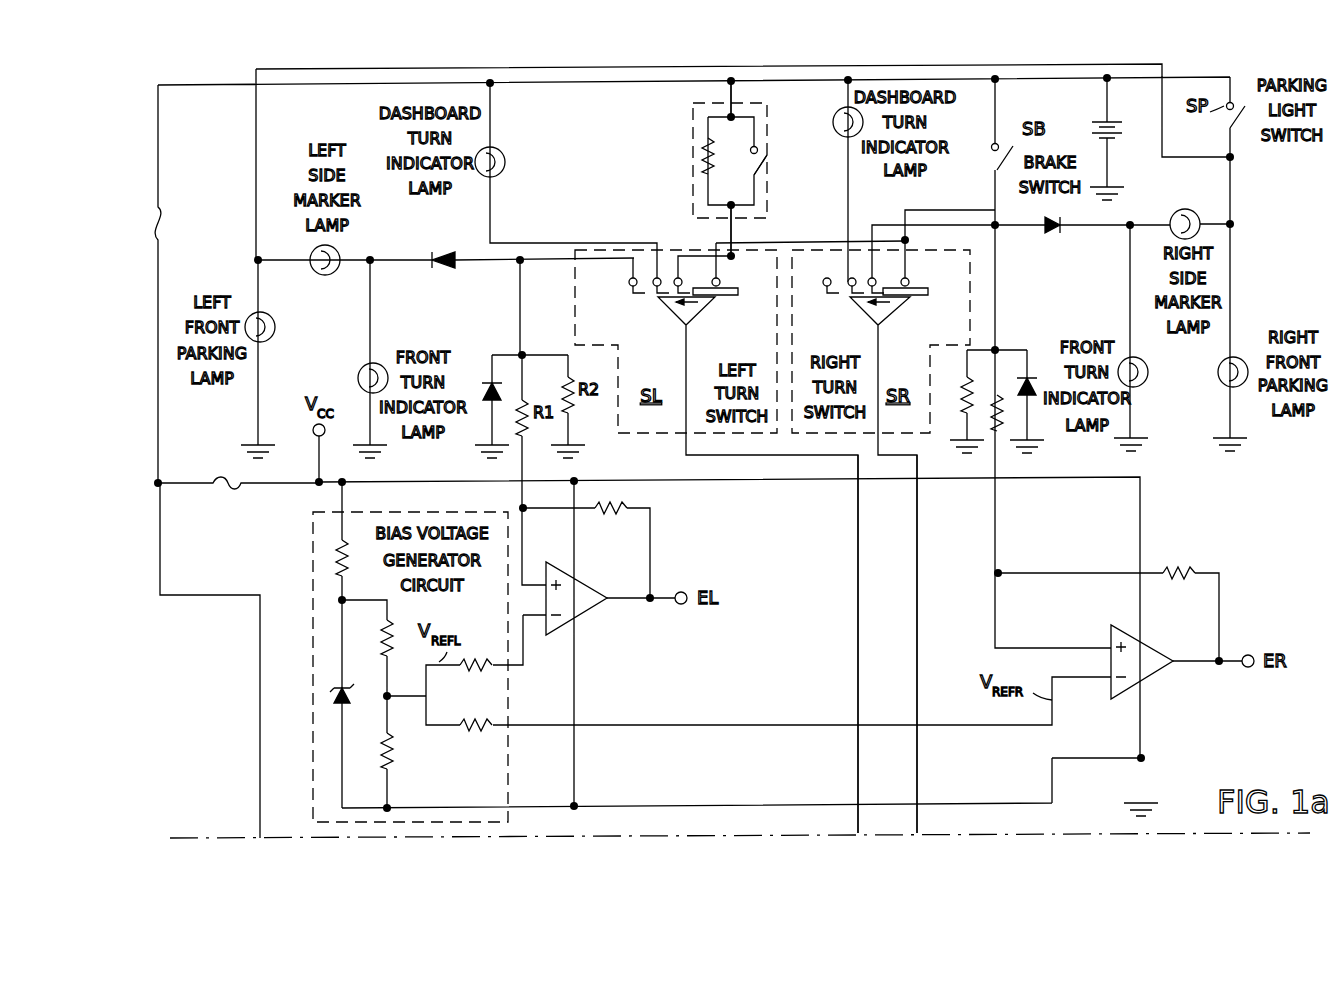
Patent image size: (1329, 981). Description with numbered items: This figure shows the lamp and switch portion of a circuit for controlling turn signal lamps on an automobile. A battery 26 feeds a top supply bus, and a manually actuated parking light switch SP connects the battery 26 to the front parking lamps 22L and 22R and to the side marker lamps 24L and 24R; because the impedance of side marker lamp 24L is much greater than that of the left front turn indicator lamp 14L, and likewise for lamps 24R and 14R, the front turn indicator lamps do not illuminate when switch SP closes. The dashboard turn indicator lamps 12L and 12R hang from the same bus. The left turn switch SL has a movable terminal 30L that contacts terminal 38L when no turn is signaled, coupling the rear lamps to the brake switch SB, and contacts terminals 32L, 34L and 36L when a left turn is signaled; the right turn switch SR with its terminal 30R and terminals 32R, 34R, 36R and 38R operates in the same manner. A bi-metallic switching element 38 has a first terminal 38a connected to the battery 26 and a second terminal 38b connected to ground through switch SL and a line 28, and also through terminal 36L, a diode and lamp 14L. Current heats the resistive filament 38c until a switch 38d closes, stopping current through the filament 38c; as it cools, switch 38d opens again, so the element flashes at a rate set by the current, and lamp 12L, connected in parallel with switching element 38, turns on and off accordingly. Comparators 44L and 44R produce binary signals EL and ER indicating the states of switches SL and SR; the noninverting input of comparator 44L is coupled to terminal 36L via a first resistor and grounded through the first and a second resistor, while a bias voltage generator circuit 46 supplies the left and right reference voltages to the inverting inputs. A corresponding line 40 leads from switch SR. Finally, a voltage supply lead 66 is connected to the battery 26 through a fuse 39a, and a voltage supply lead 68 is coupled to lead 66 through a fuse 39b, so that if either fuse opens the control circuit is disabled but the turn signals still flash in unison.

The left turn dashboard indicator lamp 12L is at (500, 177).
The right turn dashboard indicator lamp 12R is at (833, 116).
The left turn front indicator lamp 14L is at (357, 370).
The right turn front indicator lamp 14R is at (1142, 385).
The left front parking lamp 22L is at (268, 344).
The right front parking lamp 22R is at (1222, 388).
The left side marker lamp 24L is at (322, 278).
The right side marker lamp 24R is at (1190, 206).
The battery 26 is at (1115, 150).
The line 28 is at (858, 757).
The switch terminal 30L is at (716, 517).
The switch terminal 30R is at (882, 509).
The terminal 32L is at (676, 268).
The terminal 32R is at (824, 286).
The terminal 34L is at (655, 276).
The terminal 34R is at (851, 276).
The terminal 36L is at (631, 280).
The terminal 36R is at (888, 226).
The bi-metallic switching element 38 is at (768, 192).
The first terminal 38a is at (731, 100).
The second terminal 38b is at (731, 235).
The resistive filament 38c is at (693, 152).
The switch 38d is at (760, 168).
The terminal 38L is at (719, 275).
The terminal 38R is at (911, 274).
The fuse 39a is at (159, 208).
The fuse 39b is at (236, 497).
The right turn switch output line 40 is at (922, 757).
The comparator 44L is at (588, 610).
The comparator 44R is at (1152, 673).
The circuit 46 is at (508, 757).
The voltage supply lead 66 is at (258, 780).
The voltage supply lead 68 is at (777, 481).